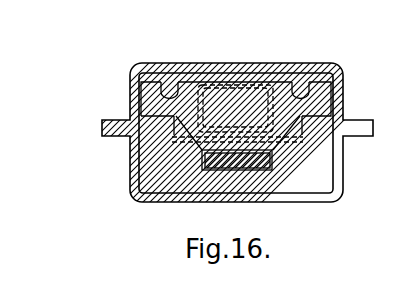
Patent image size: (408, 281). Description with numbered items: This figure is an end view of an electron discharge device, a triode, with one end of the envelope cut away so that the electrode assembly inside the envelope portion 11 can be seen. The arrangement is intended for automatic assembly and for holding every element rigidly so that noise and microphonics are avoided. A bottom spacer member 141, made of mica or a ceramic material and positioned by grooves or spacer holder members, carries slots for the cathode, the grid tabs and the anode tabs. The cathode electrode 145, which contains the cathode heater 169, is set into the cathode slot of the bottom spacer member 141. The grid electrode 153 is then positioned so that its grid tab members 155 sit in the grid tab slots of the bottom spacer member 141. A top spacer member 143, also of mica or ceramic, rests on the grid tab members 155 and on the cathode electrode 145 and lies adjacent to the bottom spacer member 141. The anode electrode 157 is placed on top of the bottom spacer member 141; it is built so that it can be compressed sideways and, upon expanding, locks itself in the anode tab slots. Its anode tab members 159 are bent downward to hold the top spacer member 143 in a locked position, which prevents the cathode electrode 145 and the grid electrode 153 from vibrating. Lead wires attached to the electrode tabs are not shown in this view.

The envelope portion 11 is at (135, 167).
The bottom spacer member 141 is at (325, 178).
The top spacer member 143 is at (152, 92).
The cathode electrode 145 is at (201, 157).
The grid electrode 153 is at (291, 143).
The grid tab member 155 is at (301, 117).
The anode electrode 157 is at (268, 101).
The anode tab member 159 is at (171, 94).
The cathode heater 169 is at (258, 162).